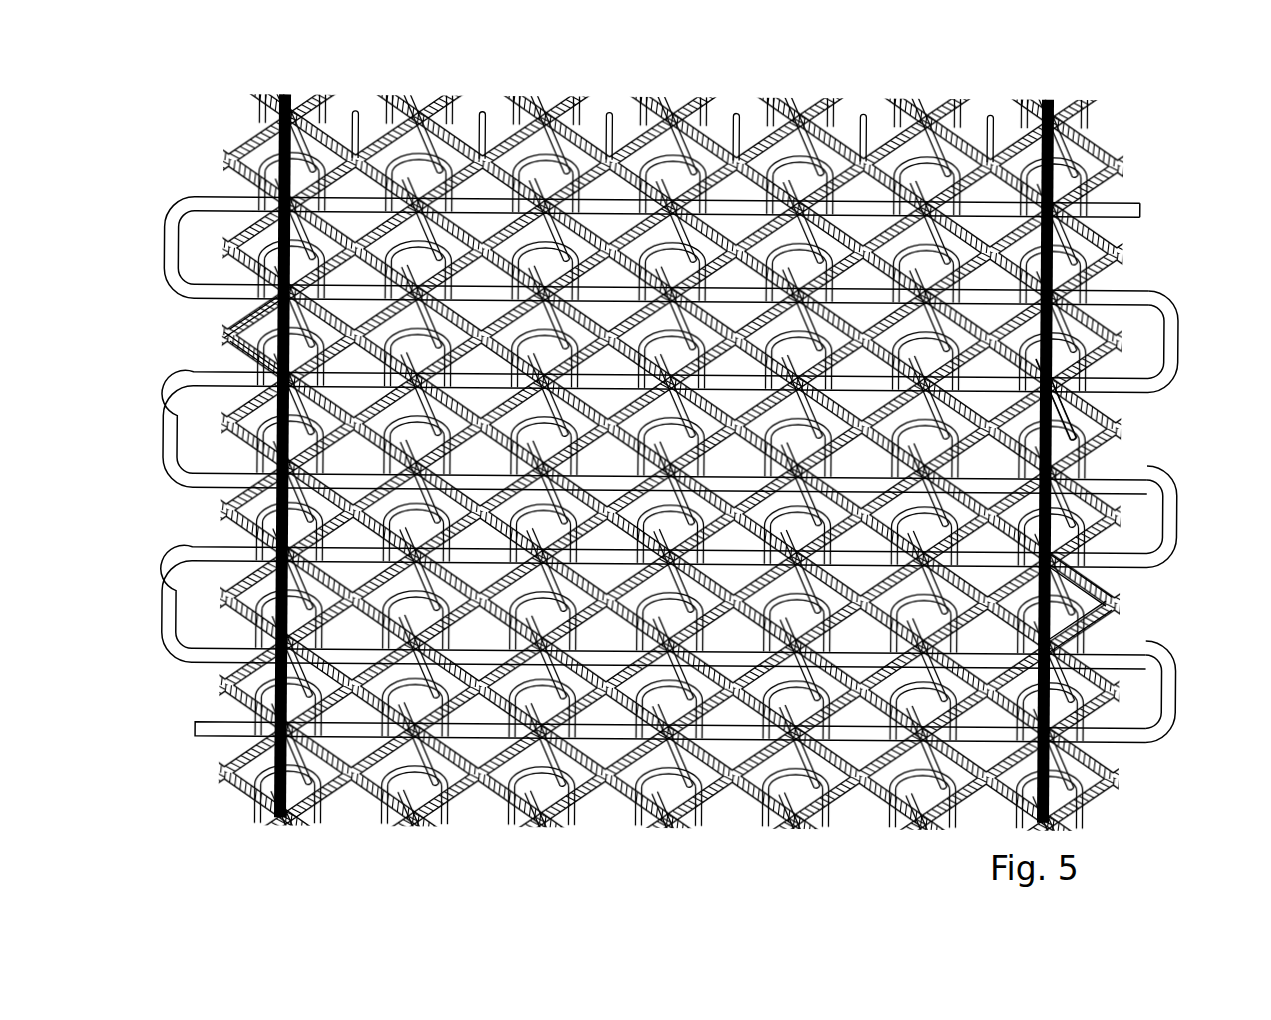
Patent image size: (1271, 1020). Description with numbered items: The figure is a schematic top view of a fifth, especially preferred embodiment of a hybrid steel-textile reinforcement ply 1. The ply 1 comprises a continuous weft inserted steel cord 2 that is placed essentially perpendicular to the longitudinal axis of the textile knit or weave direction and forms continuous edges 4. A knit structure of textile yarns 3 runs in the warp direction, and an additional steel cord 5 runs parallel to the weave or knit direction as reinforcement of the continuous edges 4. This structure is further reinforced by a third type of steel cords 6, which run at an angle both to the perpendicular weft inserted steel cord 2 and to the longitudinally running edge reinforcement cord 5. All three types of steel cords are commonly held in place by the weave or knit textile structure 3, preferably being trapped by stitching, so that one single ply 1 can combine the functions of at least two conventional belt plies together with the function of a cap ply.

The hybrid steel-textile reinforcement ply 1 is at (1166, 89).
The weft inserted steel cord 2 is at (1100, 211).
The textile yarns 3 is at (1104, 401).
The continuous edges 4 is at (1165, 690).
The additional steel cord 5 is at (1115, 596).
The third type of steel cords 6 is at (237, 340).